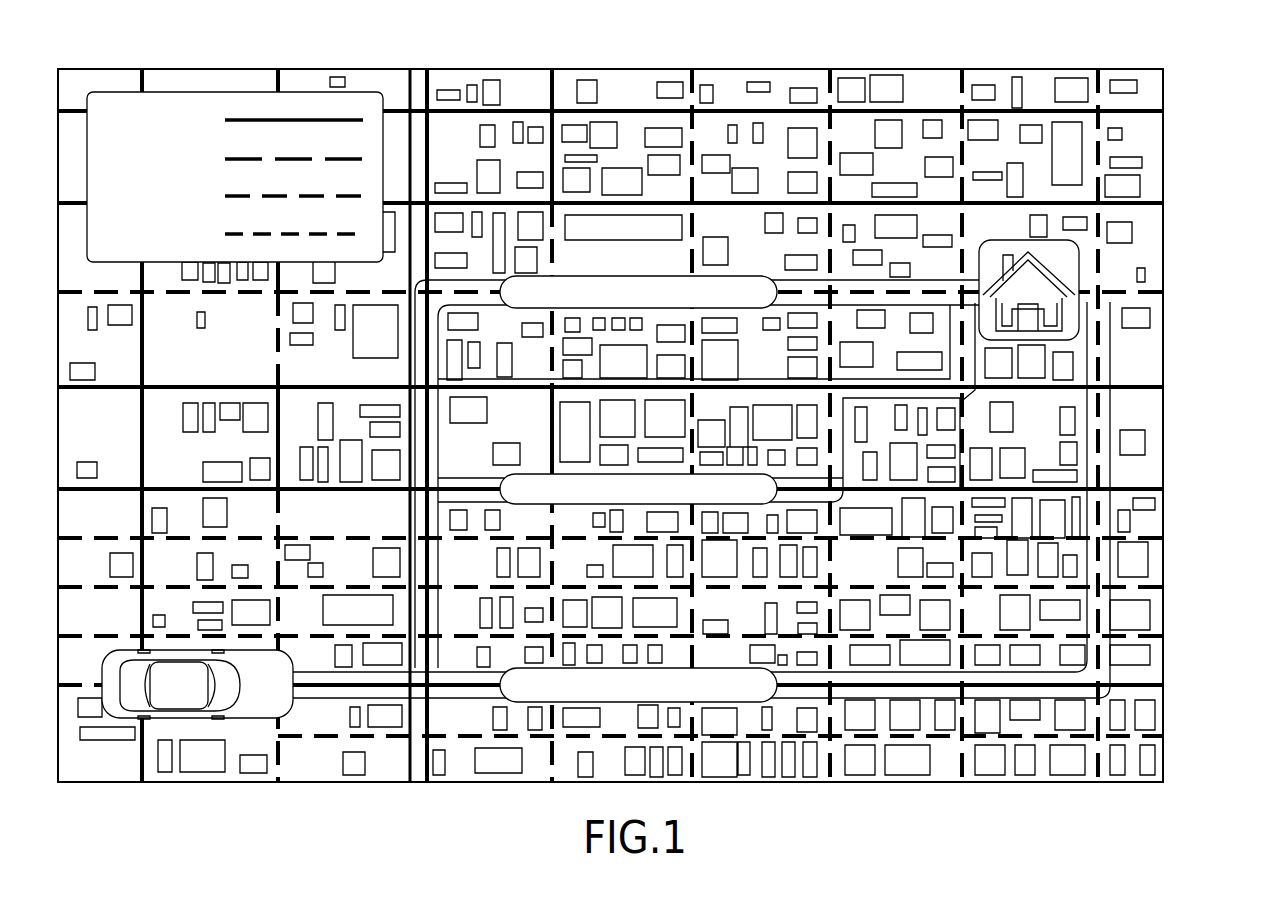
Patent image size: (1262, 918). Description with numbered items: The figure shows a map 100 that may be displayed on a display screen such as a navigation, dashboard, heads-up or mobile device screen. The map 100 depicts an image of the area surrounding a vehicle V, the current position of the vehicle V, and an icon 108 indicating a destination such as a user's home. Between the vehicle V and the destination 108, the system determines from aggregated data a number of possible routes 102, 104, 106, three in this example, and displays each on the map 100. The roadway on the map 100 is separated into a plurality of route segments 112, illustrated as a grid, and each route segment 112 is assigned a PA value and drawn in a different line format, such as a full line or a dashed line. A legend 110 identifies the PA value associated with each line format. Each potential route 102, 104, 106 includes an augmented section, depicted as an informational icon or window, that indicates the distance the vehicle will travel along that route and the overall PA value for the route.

The map 100 is at (1163, 182).
The route 102 is at (528, 278).
The route 104 is at (517, 503).
The route 106 is at (521, 703).
The destination icon 108 is at (1073, 262).
The legend 110 is at (182, 92).
The route segments 112 is at (898, 203).
The vehicle V is at (248, 708).